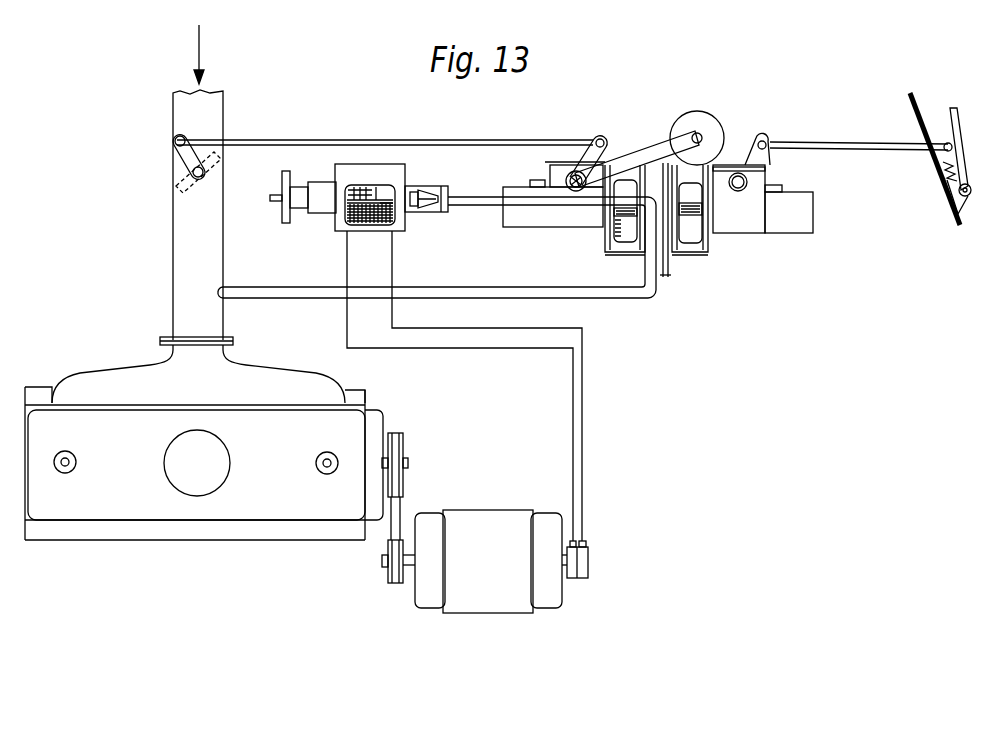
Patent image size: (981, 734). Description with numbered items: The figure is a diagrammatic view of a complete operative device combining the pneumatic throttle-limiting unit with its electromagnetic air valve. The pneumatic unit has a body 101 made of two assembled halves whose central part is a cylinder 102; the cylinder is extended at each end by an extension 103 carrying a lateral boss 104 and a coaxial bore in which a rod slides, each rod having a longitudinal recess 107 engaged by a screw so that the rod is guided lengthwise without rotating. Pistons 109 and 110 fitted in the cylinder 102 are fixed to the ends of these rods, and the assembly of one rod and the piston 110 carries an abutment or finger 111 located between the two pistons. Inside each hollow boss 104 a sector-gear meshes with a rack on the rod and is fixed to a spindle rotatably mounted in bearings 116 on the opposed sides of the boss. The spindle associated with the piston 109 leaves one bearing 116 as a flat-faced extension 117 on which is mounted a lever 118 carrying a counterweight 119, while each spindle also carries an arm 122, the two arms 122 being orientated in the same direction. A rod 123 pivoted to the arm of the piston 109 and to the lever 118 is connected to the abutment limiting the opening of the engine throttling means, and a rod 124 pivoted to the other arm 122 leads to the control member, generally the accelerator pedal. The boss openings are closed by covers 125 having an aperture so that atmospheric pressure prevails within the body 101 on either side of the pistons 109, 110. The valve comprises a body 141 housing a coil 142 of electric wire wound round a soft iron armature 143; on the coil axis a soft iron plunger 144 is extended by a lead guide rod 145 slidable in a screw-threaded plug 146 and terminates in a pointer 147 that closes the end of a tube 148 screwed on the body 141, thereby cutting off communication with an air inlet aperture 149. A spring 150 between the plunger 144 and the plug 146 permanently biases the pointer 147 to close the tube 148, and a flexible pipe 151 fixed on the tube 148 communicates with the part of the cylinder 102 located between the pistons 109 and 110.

The body 101 is at (716, 241).
The cylinder 102 is at (665, 292).
The extension 103 is at (505, 220).
The lateral boss 104 is at (601, 205).
The longitudinal recess 107 is at (695, 222).
The piston 109 is at (628, 242).
The piston 110 is at (688, 248).
The abutment or finger 111 is at (650, 258).
The bearings 116 is at (597, 194).
The flat-faced extension 117 is at (580, 163).
The lever 118 is at (628, 164).
The counterweight 119 is at (693, 124).
The arm 122 is at (601, 153).
The rod 123 is at (468, 140).
The rod 124 is at (862, 143).
The cover 125 is at (571, 172).
The body 141 is at (378, 166).
The coil 142 is at (389, 224).
The soft iron armature 143 is at (370, 219).
The soft iron plunger 144 is at (352, 226).
The lead guide rod 145 is at (272, 198).
The plug 146 is at (292, 205).
The pointer 147 is at (428, 210).
The tube 148 is at (450, 197).
The air inlet aperture 149 is at (415, 186).
The spring 150 is at (356, 188).
The flexible pipe 151 is at (526, 206).